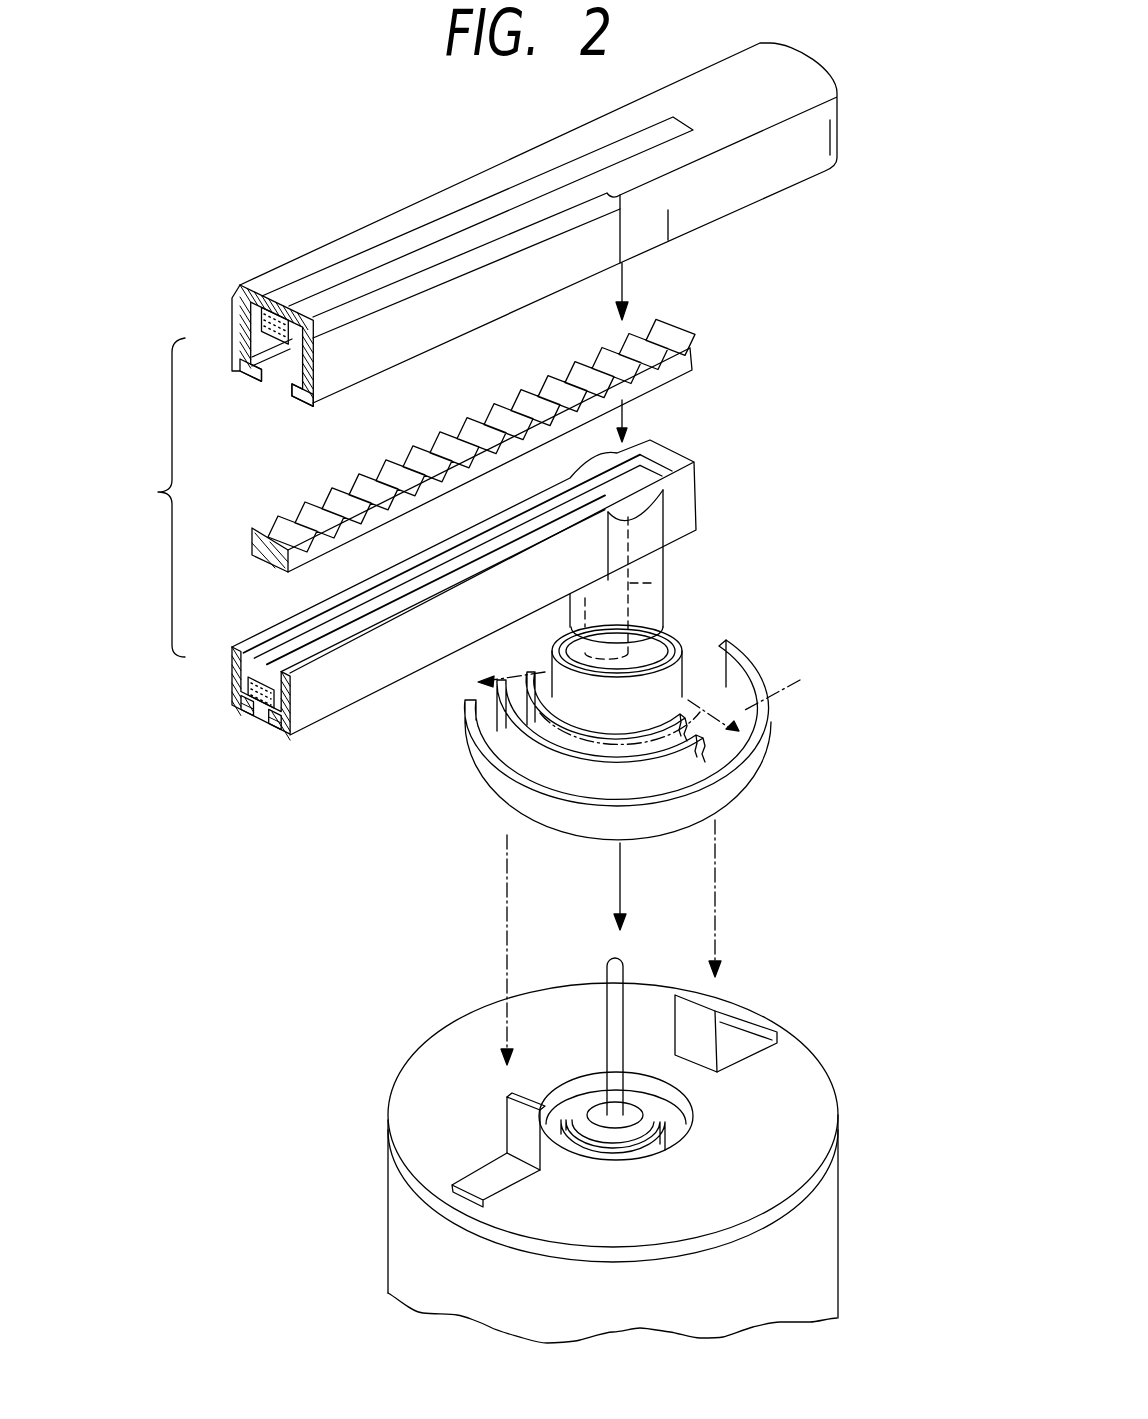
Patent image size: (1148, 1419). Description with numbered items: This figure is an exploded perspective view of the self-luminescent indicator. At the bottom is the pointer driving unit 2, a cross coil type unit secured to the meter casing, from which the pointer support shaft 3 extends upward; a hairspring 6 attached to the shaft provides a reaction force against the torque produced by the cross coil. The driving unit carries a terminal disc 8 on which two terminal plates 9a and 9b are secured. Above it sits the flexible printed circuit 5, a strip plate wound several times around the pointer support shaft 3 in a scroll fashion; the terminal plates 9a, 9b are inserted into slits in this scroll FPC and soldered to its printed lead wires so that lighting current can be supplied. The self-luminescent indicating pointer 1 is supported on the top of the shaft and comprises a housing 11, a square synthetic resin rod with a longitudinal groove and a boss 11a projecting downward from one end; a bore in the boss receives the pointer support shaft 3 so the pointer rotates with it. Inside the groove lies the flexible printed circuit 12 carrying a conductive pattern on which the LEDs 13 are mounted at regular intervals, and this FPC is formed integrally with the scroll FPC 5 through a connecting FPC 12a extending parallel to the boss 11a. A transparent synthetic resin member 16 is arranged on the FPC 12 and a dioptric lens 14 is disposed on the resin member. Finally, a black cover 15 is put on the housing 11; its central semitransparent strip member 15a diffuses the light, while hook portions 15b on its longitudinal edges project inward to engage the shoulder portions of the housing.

The self-luminescent indicating pointer 1 is at (161, 497).
The pointer driving unit 2 is at (400, 1213).
The pointer support shaft 3 is at (617, 960).
The flexible printed circuit (scroll FPC) 5 is at (477, 767).
The hairspring 6 is at (570, 1140).
The terminal disc 8 is at (807, 1093).
The terminal plate 9a is at (722, 1015).
The terminal plate 9b is at (512, 1117).
The housing 11 is at (408, 673).
The boss 11a is at (665, 602).
The flexible printed circuit (FPC) 12 is at (275, 733).
The connecting FPC 12a is at (660, 574).
The LEDs 13 is at (250, 720).
The dioptric lens 14 is at (310, 518).
The cover 15 is at (378, 225).
The semitransparent strip member 15a is at (276, 300).
The hook portions 15b is at (292, 393).
The transparent synthetic resin member 16 is at (262, 677).